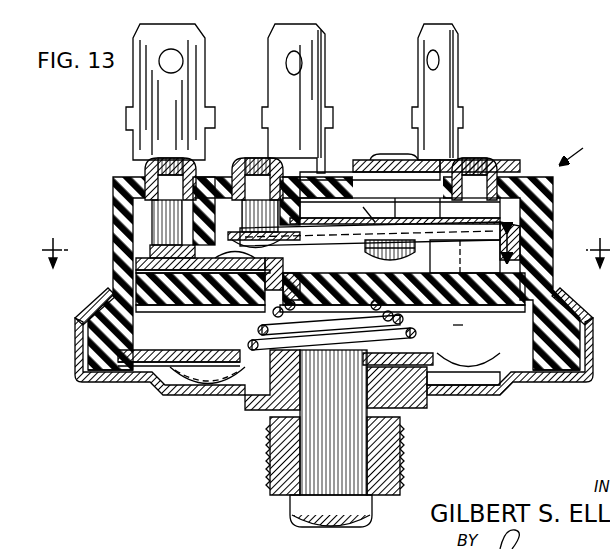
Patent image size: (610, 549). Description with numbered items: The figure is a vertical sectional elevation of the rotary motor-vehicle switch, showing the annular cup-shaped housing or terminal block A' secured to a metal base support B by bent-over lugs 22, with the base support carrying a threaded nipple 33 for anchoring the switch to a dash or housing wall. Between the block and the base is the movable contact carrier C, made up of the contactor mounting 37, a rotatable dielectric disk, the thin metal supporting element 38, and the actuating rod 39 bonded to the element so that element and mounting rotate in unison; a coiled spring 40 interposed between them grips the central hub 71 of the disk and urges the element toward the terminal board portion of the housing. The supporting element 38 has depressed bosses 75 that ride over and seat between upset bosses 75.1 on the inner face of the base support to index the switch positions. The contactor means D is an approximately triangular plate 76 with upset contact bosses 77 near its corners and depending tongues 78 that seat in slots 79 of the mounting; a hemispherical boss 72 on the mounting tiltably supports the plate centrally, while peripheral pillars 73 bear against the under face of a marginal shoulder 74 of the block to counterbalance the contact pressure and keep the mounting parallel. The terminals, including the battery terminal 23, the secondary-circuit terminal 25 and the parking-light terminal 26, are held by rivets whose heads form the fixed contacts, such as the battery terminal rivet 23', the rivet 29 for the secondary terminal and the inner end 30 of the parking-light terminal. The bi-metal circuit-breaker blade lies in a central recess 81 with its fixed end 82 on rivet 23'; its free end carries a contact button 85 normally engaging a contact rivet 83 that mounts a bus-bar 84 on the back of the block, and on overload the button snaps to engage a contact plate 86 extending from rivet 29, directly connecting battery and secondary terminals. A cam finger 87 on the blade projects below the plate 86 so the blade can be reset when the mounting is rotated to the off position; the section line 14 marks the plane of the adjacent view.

The section line 14— 14 is at (326, 271).
The bent-over lugs 22 is at (90, 305).
The battery terminal 23 is at (315, 98).
The battery terminal rivet 23' is at (271, 225).
The secondary-circuit terminal 25 is at (456, 76).
The parking-light terminal 26 is at (140, 97).
The rivet for secondary-circuit terminal 29 is at (375, 260).
The inner end of parking-light terminal 30 is at (135, 243).
The threaded nipple 33 is at (388, 496).
The contactor mounting 37 is at (518, 302).
The supporting element 38 is at (260, 360).
The actuating rod 39 is at (345, 530).
The spring 40 is at (280, 330).
The central hub 71 is at (385, 322).
The hemispherical boss 72 is at (180, 300).
The peripheral pillars 73 is at (488, 264).
The marginal shoulder 74 is at (528, 257).
The depressed bosses 75 is at (165, 387).
The upset bosses 75.1 is at (213, 385).
The contactor plate 76 is at (232, 295).
The contact bosses 77 is at (160, 262).
The tongues 78 is at (290, 280).
The slots 79 is at (255, 300).
The central recess 81 is at (333, 170).
The fixed end of bi-metal strip 82 is at (220, 162).
The contact rivet 83 is at (498, 170).
The bus-bar 84 is at (362, 160).
The contact button 85 is at (521, 208).
The contact plate 86 is at (500, 247).
The cam finger 87 is at (510, 227).
The cup-shaped housing A' is at (579, 153).
The base support B is at (487, 392).
The movable contact carrier C is at (330, 299).
The terminal contactor means D is at (283, 273).